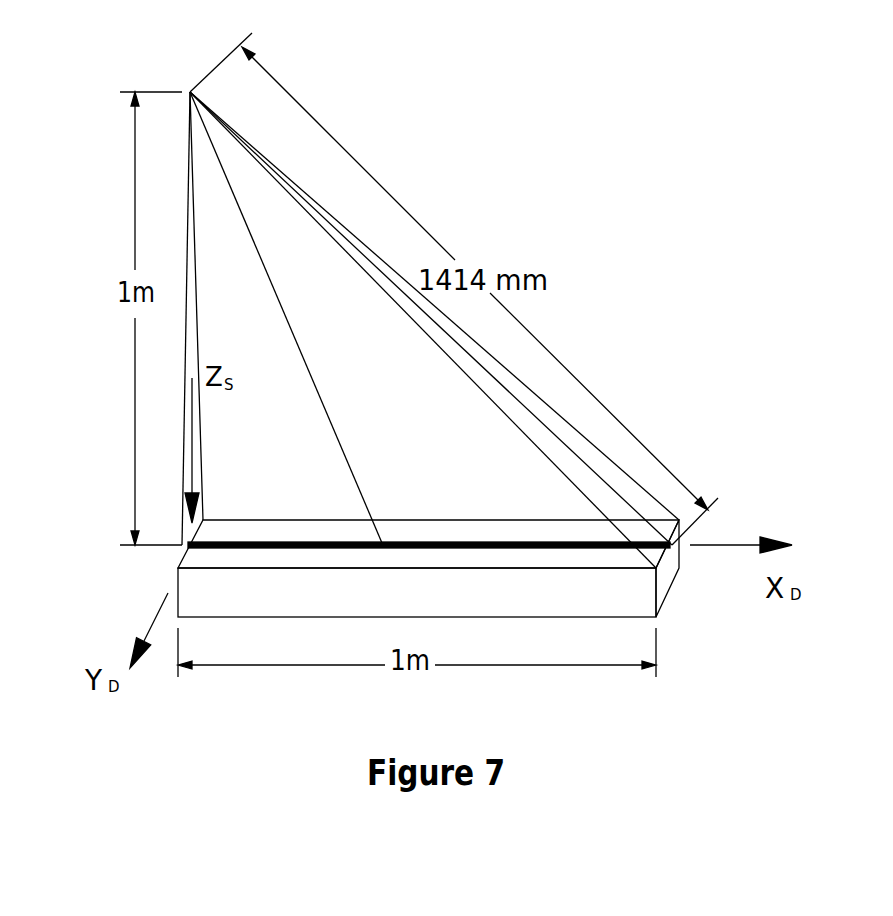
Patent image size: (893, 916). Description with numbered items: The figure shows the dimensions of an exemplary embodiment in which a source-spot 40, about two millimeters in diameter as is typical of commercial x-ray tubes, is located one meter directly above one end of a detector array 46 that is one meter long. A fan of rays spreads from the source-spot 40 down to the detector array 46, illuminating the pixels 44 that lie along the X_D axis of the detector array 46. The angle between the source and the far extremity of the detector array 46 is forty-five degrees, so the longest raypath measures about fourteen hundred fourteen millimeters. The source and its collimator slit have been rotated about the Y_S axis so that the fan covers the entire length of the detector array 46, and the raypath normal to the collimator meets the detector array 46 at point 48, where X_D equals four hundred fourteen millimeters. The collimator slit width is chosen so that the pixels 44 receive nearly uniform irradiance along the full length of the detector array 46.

The source-spot 40 is at (377, 297).
The pixels 44 is at (492, 543).
The detector array 46 is at (679, 592).
The point 48 is at (380, 543).